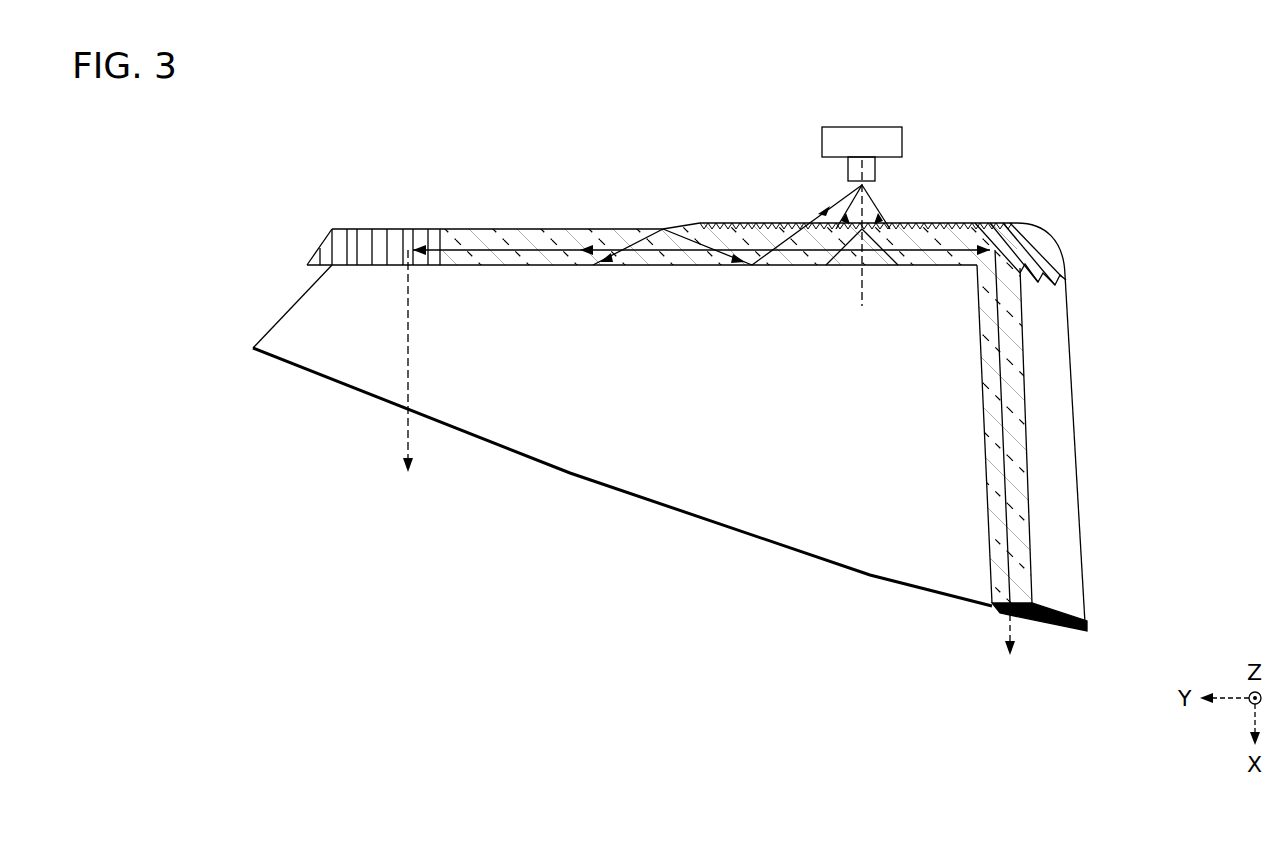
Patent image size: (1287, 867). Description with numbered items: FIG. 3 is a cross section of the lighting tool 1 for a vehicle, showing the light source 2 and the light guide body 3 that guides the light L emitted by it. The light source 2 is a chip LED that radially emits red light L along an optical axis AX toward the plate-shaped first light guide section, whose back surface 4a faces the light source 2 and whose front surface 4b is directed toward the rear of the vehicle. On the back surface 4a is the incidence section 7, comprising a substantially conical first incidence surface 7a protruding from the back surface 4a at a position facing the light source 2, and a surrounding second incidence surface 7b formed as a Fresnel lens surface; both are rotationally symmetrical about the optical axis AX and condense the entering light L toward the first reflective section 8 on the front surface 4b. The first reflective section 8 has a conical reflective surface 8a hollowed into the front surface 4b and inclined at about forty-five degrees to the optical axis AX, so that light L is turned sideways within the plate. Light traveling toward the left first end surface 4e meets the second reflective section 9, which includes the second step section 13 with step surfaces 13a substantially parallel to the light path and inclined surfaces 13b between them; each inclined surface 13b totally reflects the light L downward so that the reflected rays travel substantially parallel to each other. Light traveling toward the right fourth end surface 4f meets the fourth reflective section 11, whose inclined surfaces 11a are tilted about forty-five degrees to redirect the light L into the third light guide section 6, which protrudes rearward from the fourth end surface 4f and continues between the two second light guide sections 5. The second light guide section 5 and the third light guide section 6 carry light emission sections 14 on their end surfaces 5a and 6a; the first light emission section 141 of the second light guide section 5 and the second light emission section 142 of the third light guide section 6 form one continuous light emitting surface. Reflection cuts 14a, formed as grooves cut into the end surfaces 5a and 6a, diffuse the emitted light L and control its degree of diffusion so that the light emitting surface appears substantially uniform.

The lighting tool for a vehicle 1 is at (279, 117).
The light source 2 is at (904, 142).
The light guide body 3 is at (948, 214).
The back surface 4a is at (582, 222).
The front surface 4b is at (539, 272).
The first end surface 4e is at (320, 234).
The fourth end surface 4f is at (1054, 240).
The second light guide section 5 is at (716, 497).
The end surface 5a is at (767, 552).
The third light guide section 6 is at (1070, 509).
The end surface 6a is at (1080, 638).
The incidence section 7 is at (783, 130).
The first incidence surface 7a is at (856, 187).
The second incidence surface 7b is at (762, 222).
The first reflective section 8 is at (862, 247).
The reflective surface 8a is at (868, 270).
The second reflective section 9 is at (359, 247).
The fourth reflective section 11 is at (1020, 254).
The inclined surface 11a is at (1006, 258).
The second step section 13 is at (445, 140).
The step surface 13a is at (389, 229).
The inclined surface 13b is at (406, 229).
The light emission section 14 is at (607, 489).
The first light emission section 141 is at (622, 477).
The second light emission section 142 is at (1048, 628).
The reflection cut 14a is at (836, 564).
The optical axis AX is at (862, 306).
The light L is at (505, 229).